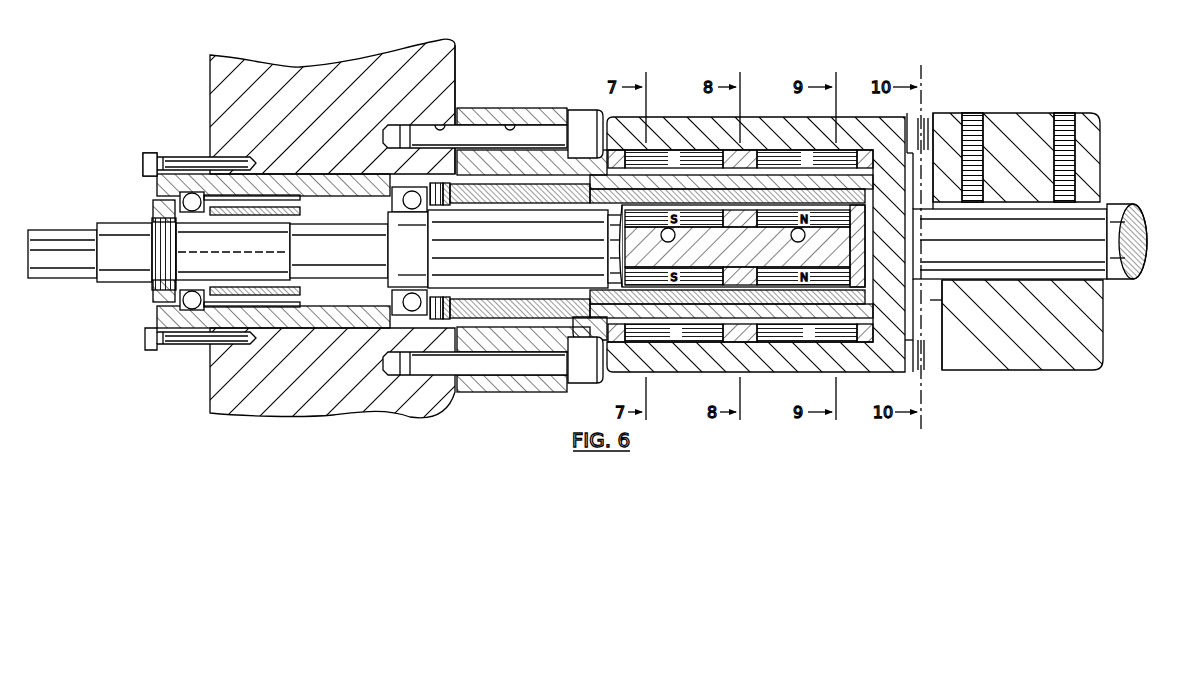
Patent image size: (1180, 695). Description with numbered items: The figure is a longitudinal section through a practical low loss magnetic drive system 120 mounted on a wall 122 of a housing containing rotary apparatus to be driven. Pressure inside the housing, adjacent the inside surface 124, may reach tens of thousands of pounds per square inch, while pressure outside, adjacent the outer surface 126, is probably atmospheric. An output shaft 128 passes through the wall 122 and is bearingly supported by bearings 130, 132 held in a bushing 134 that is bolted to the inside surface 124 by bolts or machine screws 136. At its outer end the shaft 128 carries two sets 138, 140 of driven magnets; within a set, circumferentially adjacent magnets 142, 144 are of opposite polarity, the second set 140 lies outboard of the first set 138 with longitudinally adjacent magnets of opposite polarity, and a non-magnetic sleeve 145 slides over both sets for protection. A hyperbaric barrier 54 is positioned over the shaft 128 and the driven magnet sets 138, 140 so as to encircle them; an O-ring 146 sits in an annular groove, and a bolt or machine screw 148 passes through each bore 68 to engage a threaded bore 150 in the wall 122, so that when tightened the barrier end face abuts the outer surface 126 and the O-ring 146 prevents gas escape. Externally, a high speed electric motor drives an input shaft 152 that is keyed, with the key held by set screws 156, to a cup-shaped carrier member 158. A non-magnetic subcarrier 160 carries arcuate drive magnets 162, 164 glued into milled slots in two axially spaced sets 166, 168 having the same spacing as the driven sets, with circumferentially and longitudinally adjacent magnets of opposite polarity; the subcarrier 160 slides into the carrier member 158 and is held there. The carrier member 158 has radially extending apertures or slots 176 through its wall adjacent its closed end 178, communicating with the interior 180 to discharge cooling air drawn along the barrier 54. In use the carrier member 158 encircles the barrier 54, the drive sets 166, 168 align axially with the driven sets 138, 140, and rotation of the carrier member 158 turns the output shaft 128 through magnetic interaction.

The hyperbaric barrier 54 is at (596, 385).
The bore 68 is at (533, 121).
The low loss magnetic drive system 120 is at (683, 80).
The wall 122 is at (233, 383).
The inside surface 124 is at (213, 367).
The outer surface 126 is at (460, 388).
The output shaft 128 is at (60, 280).
The bearing 130 is at (153, 290).
The bearing 132 is at (455, 96).
The bushing 134 is at (192, 150).
The bolts or machine screws 136 is at (143, 153).
The first set of driven magnets 138 is at (648, 140).
The second set of driven magnets 140 is at (772, 143).
The driven magnet 142 is at (818, 145).
The driven magnet 144 is at (697, 143).
The non-magnetic sleeve 145 is at (753, 142).
The O-ring 146 is at (475, 381).
The bolt or machine screw 148 is at (548, 139).
The threaded bore 150 is at (446, 120).
The input shaft 152 is at (1118, 245).
The set screws 156 is at (1062, 123).
The cup-shaped carrier member 158 is at (1088, 127).
The subcarrier 160 is at (737, 322).
The drive magnet 162 is at (665, 347).
The drive magnet 164 is at (770, 347).
The first set of drive magnets 166 is at (800, 343).
The second set of drive magnets 168 is at (647, 345).
The radially extending apertures or slots 176 is at (918, 123).
The closed end 178 is at (914, 372).
The interior 180 is at (932, 323).